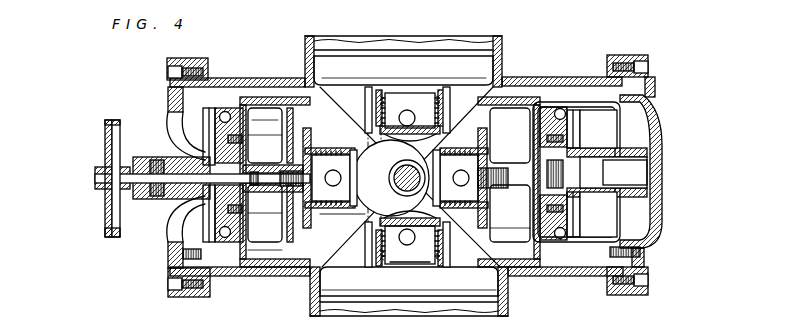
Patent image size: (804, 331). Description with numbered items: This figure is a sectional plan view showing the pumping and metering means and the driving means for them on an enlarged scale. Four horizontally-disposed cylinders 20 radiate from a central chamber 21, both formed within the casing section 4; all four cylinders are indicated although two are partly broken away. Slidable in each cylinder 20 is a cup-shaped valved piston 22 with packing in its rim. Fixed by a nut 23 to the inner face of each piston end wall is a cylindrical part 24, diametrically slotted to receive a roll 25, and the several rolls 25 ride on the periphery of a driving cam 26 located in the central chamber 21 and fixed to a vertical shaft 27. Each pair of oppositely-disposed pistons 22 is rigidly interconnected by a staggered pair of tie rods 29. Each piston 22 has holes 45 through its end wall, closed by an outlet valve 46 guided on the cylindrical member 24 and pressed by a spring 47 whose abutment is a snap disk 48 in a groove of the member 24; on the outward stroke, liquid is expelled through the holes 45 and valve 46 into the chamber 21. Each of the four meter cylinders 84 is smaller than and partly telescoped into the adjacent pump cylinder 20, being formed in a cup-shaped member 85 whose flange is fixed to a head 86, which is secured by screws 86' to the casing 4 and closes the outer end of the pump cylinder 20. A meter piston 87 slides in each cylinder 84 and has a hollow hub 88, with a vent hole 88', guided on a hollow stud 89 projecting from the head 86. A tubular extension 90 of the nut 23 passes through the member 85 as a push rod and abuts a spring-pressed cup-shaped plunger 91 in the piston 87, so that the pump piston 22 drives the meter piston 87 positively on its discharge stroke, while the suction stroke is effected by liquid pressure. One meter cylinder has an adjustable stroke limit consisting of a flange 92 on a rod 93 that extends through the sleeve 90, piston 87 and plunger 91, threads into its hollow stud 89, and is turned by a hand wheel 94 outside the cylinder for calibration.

The casing section 4 is at (674, 173).
The pump cylinder 20 is at (488, 65).
The central chamber 21 is at (472, 260).
The valved piston 22 is at (333, 65).
The nut 23 is at (500, 195).
The cylindrical part 24 is at (402, 100).
The roll 25 is at (380, 107).
The driving cam 26 is at (367, 220).
The vertical shaft 27 is at (405, 160).
The tie rods 29 is at (370, 113).
The holes 45 is at (303, 135).
The outlet valve 46 is at (483, 132).
The spring 47 is at (428, 107).
The snap disk 48 is at (400, 248).
The meter cylinder 84 is at (262, 230).
The cup-shaped member 85 is at (247, 253).
The head 86 is at (414, 172).
The screws 86' is at (419, 176).
The meter piston 87 is at (215, 134).
The hollow hub 88 is at (384, 174).
The vent hole 88' is at (375, 172).
The hollow stud 89 is at (190, 198).
The tubular extension 90 is at (383, 179).
The plunger 91 is at (243, 200).
The flange 92 is at (280, 124).
The rod 93 is at (97, 179).
The hand wheel 94 is at (105, 206).